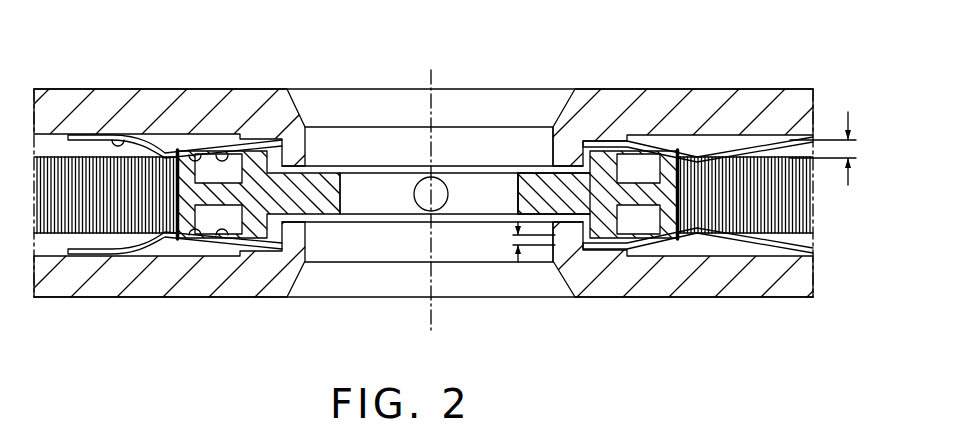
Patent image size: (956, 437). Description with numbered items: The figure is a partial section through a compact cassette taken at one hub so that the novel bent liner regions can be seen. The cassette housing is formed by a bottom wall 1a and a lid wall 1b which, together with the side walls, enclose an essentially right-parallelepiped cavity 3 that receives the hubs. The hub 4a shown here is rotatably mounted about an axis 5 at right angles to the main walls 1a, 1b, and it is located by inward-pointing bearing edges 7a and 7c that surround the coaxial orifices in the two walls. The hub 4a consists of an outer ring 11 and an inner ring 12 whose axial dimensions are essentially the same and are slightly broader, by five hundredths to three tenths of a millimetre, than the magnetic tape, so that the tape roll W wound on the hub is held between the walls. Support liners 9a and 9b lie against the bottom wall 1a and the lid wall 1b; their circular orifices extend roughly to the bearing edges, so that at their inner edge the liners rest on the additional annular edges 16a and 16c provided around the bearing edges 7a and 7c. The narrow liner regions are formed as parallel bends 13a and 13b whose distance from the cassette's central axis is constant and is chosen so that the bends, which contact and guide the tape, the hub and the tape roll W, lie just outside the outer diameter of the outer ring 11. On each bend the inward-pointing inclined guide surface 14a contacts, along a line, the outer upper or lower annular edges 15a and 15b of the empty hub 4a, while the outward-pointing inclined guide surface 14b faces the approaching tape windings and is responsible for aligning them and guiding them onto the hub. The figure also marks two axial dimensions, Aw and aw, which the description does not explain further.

The bottom wall 1a is at (43, 267).
The lid wall 1b is at (60, 107).
The cavity 3 is at (47, 143).
The hub 4a is at (517, 187).
The axis 5 is at (427, 82).
The bearing edge 7a is at (304, 238).
The bearing edge 7c is at (304, 141).
The support liner 9a is at (717, 140).
The support liner 9b is at (718, 253).
The outer ring 11 is at (677, 243).
The inner ring 12 is at (600, 190).
The parallel bend 13a is at (182, 147).
The parallel bend 13b is at (163, 245).
The inward-pointing inclined guide surface 14a is at (233, 151).
The outward-pointing inclined guide surface 14b is at (118, 133).
The outer upper annular edge 15a is at (208, 152).
The outer lower annular edge 15b is at (197, 237).
The annular edge 16a is at (593, 253).
The annular edge 16c is at (600, 137).
The tape roll W is at (798, 217).
The axial gap Aw is at (841, 148).
The plate gap aw is at (514, 242).